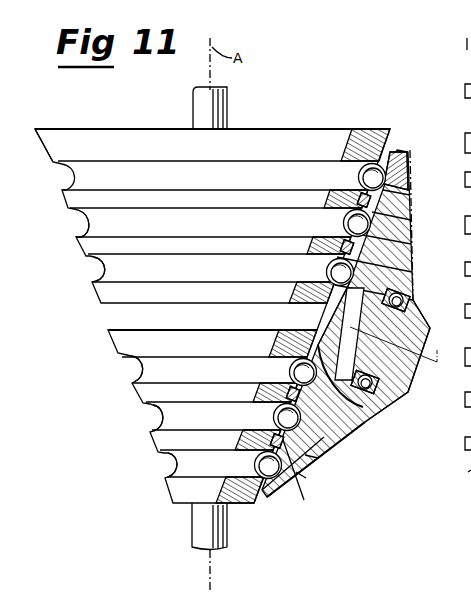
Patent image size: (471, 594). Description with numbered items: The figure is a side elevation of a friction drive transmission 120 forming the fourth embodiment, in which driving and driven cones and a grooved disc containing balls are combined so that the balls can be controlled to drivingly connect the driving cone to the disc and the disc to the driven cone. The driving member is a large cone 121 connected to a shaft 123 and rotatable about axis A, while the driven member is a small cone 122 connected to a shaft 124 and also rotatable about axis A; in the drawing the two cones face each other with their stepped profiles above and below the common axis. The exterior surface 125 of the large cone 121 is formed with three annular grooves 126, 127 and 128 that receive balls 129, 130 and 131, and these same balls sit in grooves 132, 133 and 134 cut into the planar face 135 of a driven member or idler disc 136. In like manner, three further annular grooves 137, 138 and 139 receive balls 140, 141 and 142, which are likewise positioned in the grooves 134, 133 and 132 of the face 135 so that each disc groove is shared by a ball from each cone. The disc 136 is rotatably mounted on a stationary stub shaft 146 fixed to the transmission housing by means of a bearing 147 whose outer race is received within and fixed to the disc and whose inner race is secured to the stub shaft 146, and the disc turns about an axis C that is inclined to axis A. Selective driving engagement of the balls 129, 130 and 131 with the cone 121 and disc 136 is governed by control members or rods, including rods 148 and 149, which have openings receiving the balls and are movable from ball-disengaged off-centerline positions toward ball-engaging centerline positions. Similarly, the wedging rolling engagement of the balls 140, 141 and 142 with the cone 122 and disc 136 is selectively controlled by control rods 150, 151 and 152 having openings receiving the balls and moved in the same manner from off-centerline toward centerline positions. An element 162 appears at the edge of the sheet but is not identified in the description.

The transmission 120 is at (337, 104).
The large cone 121 is at (271, 126).
The small cone 122 is at (176, 513).
The shaft 123 is at (195, 104).
The shaft 124 is at (227, 540).
The exterior surface 125 is at (362, 142).
The annular groove 126 is at (100, 268).
The annular groove 127 is at (88, 229).
The annular groove 128 is at (120, 157).
The ball 129 is at (359, 176).
The ball 130 is at (343, 224).
The ball 131 is at (326, 272).
The groove 132 is at (403, 178).
The groove 133 is at (400, 221).
The groove 134 is at (400, 266).
The planar face 135 is at (318, 313).
The idler disc 136 is at (407, 162).
The annular groove 137 is at (128, 373).
The annular groove 138 is at (152, 424).
The annular groove 139 is at (175, 466).
The ball 140 is at (289, 371).
The ball 141 is at (273, 417).
The ball 142 is at (254, 465).
The stationary stub shaft 146 is at (418, 368).
The bearing 147 is at (395, 150).
The control rod 148 is at (400, 207).
The control rod 149 is at (400, 248).
The control rod 150 is at (320, 345).
The control rod 151 is at (318, 458).
The control rod 152 is at (306, 478).
The element 162 is at (470, 472).